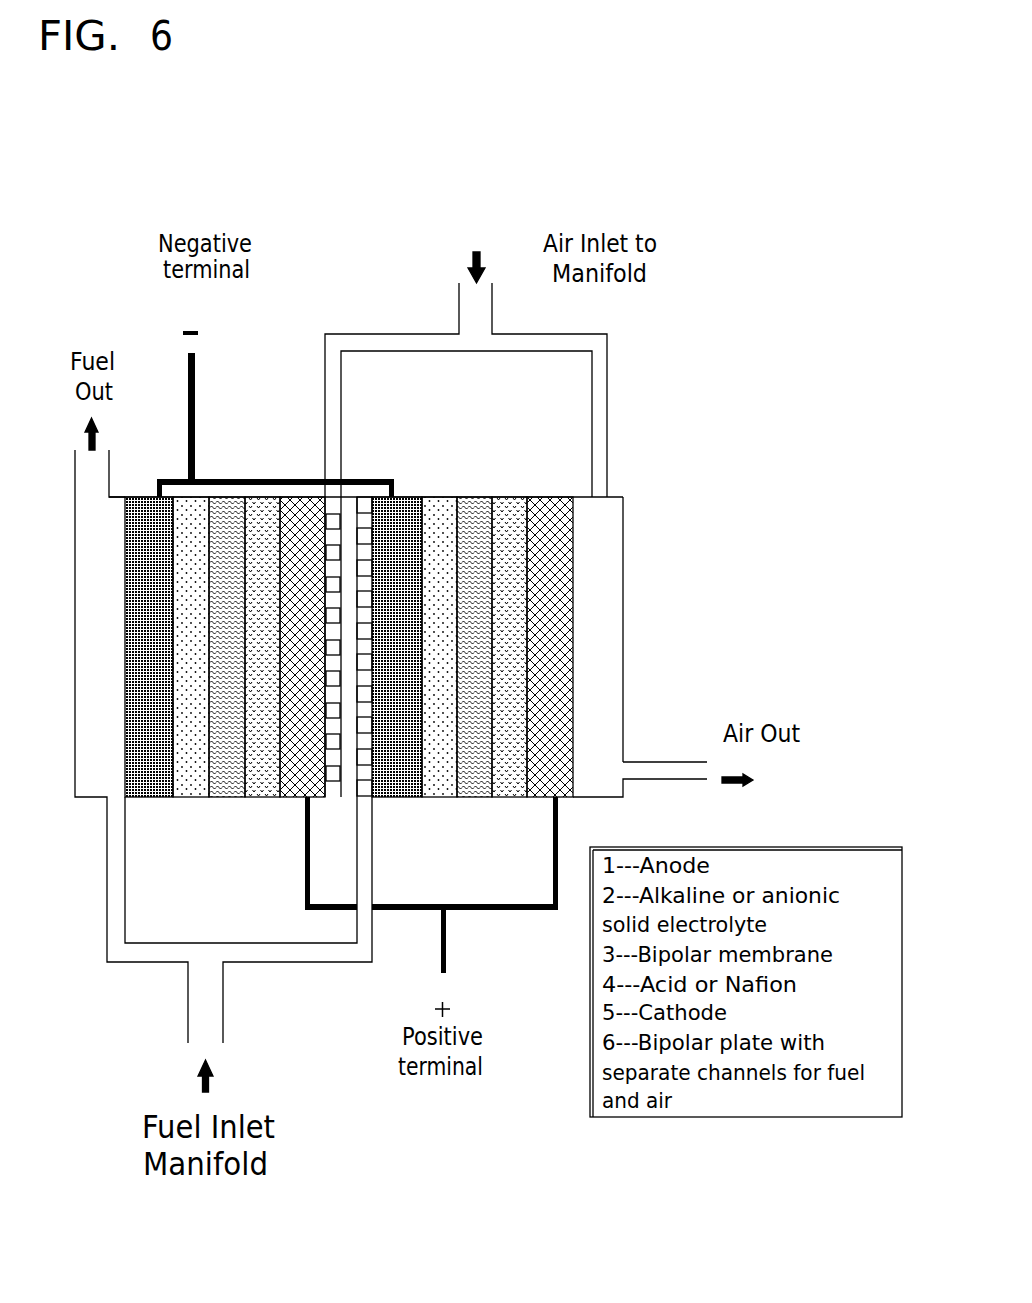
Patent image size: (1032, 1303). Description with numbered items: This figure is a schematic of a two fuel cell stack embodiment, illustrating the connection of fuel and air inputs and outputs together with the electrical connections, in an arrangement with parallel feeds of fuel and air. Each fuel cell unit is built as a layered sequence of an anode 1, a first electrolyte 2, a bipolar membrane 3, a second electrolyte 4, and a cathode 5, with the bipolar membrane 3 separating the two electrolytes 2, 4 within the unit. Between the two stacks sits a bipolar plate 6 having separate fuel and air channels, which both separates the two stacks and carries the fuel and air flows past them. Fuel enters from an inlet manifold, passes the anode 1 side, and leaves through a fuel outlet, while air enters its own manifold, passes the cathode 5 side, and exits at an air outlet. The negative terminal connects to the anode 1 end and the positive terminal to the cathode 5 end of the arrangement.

The anode 1 is at (149, 497).
The first electrolyte 2 is at (437, 497).
The bipolar membrane 3 is at (230, 497).
The second electrolyte 4 is at (508, 497).
The cathode 5 is at (302, 497).
The bipolar plate 6 is at (350, 497).